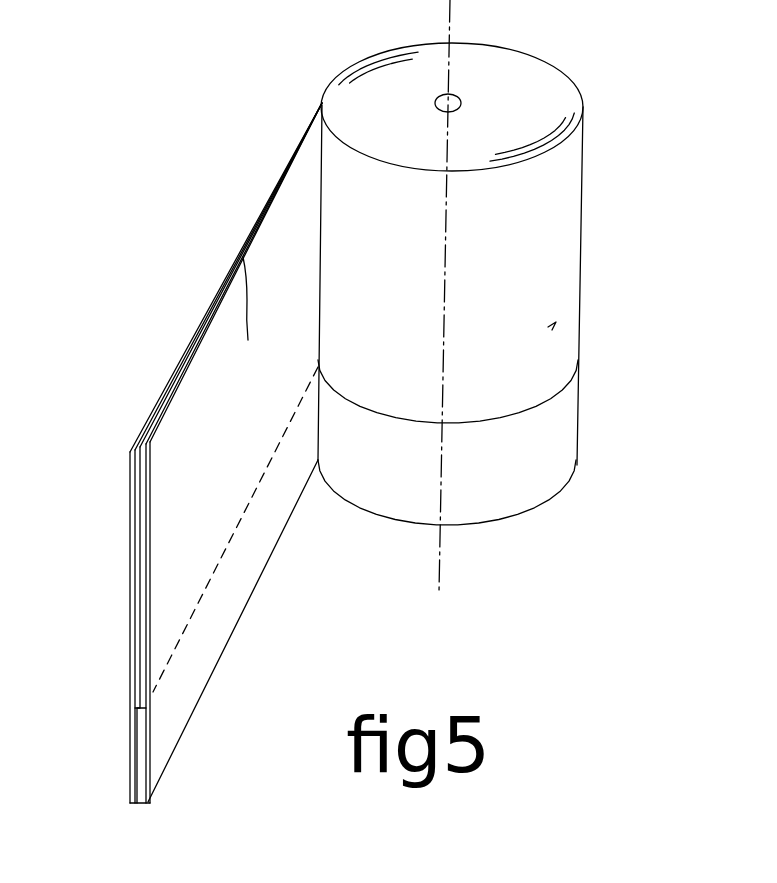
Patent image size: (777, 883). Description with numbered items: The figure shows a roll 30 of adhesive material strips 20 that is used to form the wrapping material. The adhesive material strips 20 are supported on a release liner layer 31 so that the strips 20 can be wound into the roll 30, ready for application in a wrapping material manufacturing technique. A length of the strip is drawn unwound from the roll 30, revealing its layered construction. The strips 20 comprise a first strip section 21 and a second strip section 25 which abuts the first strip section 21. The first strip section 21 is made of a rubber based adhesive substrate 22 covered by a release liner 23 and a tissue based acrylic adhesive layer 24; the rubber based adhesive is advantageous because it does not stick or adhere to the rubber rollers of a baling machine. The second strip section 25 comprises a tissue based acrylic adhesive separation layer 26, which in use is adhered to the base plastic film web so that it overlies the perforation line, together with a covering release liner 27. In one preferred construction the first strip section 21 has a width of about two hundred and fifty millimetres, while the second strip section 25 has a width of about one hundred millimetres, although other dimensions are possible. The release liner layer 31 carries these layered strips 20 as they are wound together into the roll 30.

The adhesive material strips 20 is at (545, 255).
The first strip section 21 is at (542, 298).
The roll 30 is at (535, 332).
The second strip section 25 is at (553, 420).
The rubber based adhesive substrate 22 is at (150, 605).
The release liner 23 is at (128, 590).
The tissue based acrylic adhesive layer 24 is at (128, 543).
The separation layer 26 is at (140, 763).
The covering release liner 27 is at (132, 782).
The release liner layer 31 is at (243, 257).